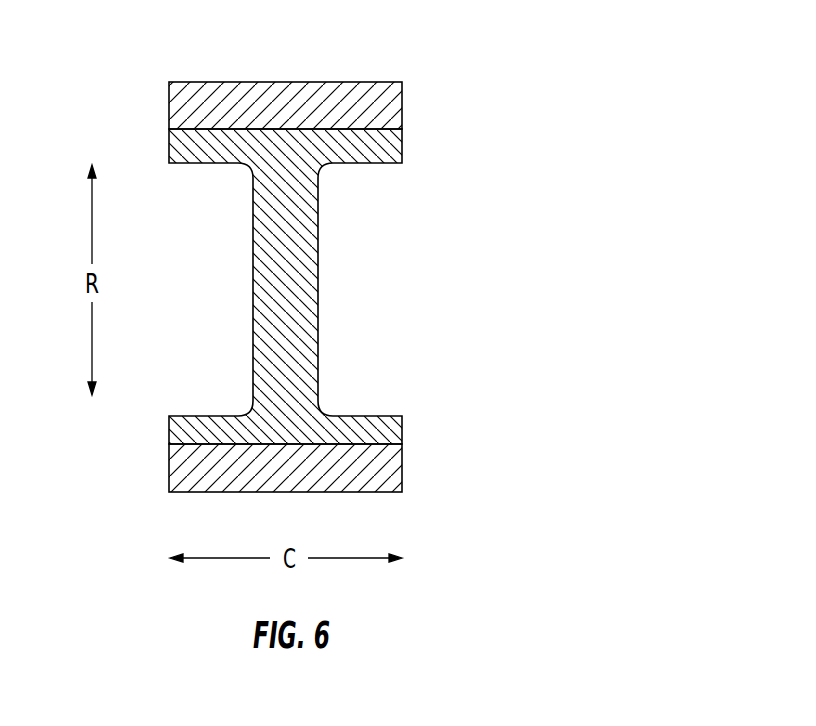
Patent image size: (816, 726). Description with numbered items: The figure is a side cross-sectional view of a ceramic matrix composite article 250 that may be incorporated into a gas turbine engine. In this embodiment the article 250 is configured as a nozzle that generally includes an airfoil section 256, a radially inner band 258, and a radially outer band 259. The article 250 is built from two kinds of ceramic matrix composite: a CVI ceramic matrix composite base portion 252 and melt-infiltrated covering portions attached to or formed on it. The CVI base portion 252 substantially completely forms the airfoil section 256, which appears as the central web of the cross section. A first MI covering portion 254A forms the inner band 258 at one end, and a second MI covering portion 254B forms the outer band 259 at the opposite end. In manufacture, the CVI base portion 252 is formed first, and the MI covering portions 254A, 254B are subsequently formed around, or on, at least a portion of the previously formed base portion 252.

The ceramic matrix composite article 250 is at (307, 284).
The CVI ceramic matrix composite base portion 252 is at (471, 270).
The first MI covering portion 254A is at (402, 463).
The second MI covering portion 254B is at (402, 97).
The airfoil section 256 is at (227, 316).
The radially inner band 258 is at (150, 468).
The radially outer band 259 is at (127, 108).